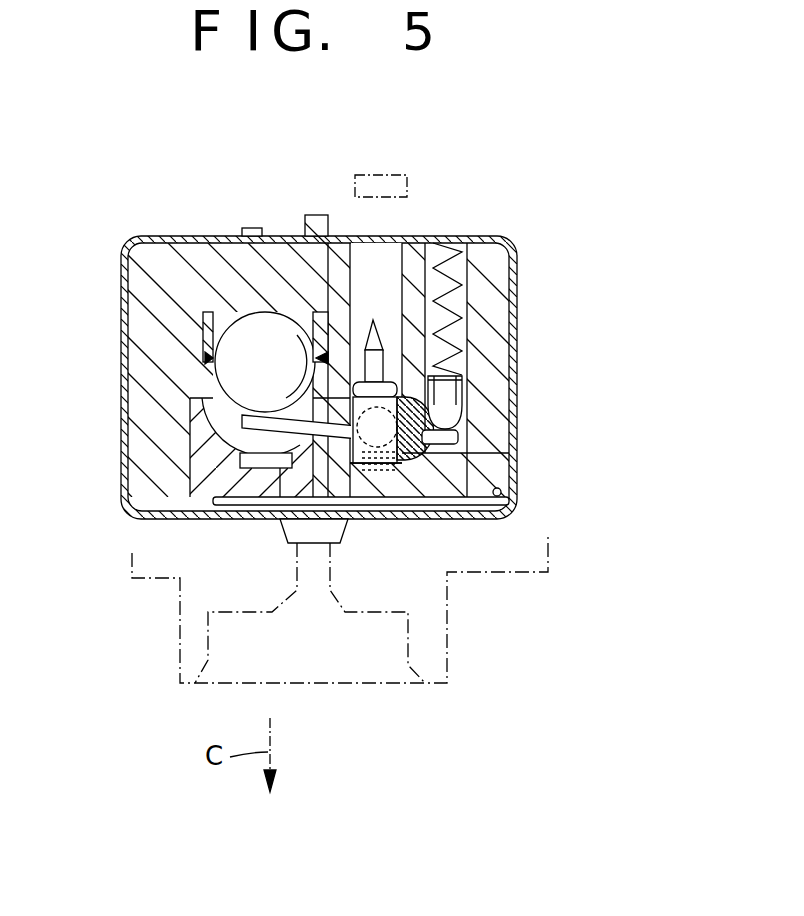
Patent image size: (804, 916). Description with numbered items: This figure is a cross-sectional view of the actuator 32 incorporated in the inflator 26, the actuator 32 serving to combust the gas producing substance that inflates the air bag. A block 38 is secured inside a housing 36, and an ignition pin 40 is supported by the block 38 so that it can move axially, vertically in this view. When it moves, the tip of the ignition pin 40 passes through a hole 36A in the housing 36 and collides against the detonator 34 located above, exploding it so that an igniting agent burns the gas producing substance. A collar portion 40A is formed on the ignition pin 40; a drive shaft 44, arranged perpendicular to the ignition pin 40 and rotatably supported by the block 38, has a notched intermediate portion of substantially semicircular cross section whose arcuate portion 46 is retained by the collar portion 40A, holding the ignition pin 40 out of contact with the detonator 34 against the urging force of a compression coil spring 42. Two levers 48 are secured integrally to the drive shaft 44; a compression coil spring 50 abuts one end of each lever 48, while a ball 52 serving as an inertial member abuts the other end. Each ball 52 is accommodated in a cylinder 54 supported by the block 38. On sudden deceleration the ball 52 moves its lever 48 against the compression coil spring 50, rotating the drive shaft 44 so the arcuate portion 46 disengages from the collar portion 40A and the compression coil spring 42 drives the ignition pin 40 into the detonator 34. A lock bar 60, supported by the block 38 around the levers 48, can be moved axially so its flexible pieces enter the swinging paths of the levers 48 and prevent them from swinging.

The inflator 26 is at (152, 580).
The actuator 32 is at (352, 381).
The detonator 34 is at (377, 172).
The housing 36 is at (124, 466).
The hole 36A is at (386, 238).
The block 38 is at (140, 282).
The ignition pin 40 is at (375, 332).
The collar portion 40A is at (432, 492).
The compression coil spring 42 is at (376, 482).
The drive shaft 44 is at (420, 410).
The arcuate portion 46 is at (405, 455).
The lever 48 is at (232, 500).
The compression coil spring 50 is at (460, 303).
The ball 52 is at (274, 325).
The cylinder 54 is at (205, 331).
The lock bar 60 is at (278, 506).